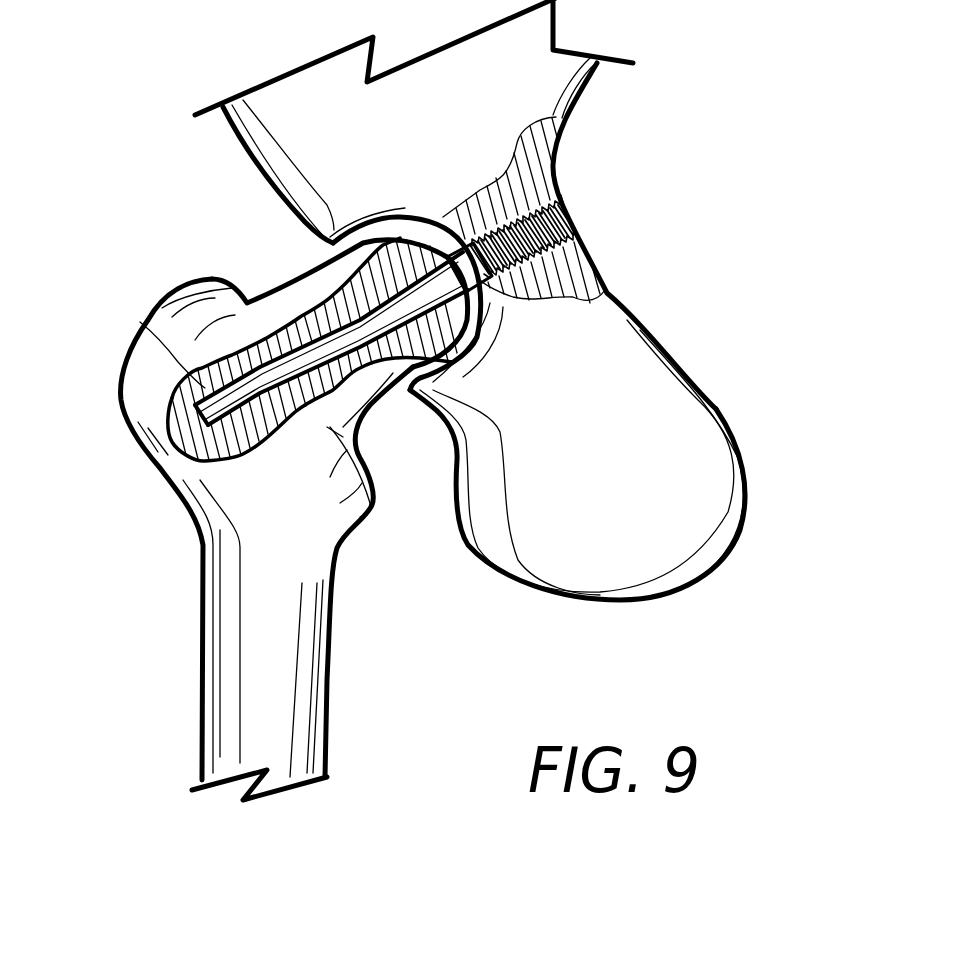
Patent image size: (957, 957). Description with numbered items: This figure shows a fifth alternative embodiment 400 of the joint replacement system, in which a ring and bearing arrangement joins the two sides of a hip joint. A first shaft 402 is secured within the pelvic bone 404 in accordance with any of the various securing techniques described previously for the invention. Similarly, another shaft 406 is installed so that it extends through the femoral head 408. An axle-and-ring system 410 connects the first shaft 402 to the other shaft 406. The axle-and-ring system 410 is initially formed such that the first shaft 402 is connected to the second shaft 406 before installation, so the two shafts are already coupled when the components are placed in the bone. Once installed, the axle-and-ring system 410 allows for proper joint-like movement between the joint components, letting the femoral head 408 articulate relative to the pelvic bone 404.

The embodiment 400 is at (675, 272).
The first shaft 402 is at (570, 222).
The pelvic bone 404 is at (703, 415).
The shaft 406 is at (140, 322).
The femoral head 408 is at (333, 273).
The axle-and-ring system 410 is at (447, 213).